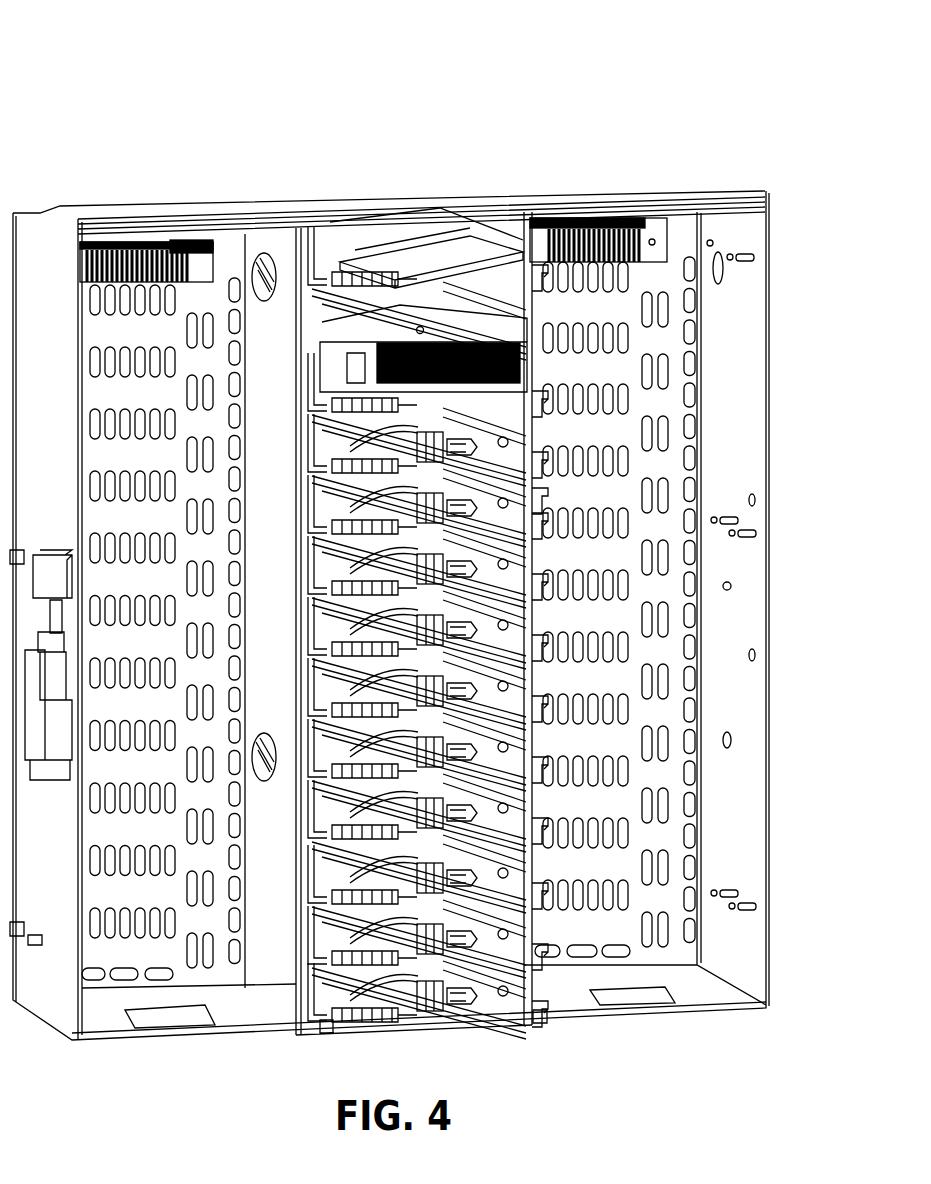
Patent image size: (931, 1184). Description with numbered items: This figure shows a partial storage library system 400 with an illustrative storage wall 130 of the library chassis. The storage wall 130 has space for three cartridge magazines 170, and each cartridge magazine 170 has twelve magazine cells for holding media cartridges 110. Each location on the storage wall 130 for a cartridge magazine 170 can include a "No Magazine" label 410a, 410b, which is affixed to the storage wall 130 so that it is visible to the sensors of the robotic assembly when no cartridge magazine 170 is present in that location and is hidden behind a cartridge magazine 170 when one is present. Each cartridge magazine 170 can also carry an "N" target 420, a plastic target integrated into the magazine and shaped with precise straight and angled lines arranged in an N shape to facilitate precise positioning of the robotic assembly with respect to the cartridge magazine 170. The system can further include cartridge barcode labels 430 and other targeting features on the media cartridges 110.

The partial storage library system 400 is at (108, 60).
The "No Magazine" label 410a is at (116, 242).
The "No Magazine" label 410b is at (651, 239).
The "N" target 420 is at (444, 246).
The cartridge barcode label 430 is at (402, 360).
The media cartridge 110 is at (419, 326).
The cartridge magazine 170 is at (540, 500).
The storage wall 130 is at (732, 585).